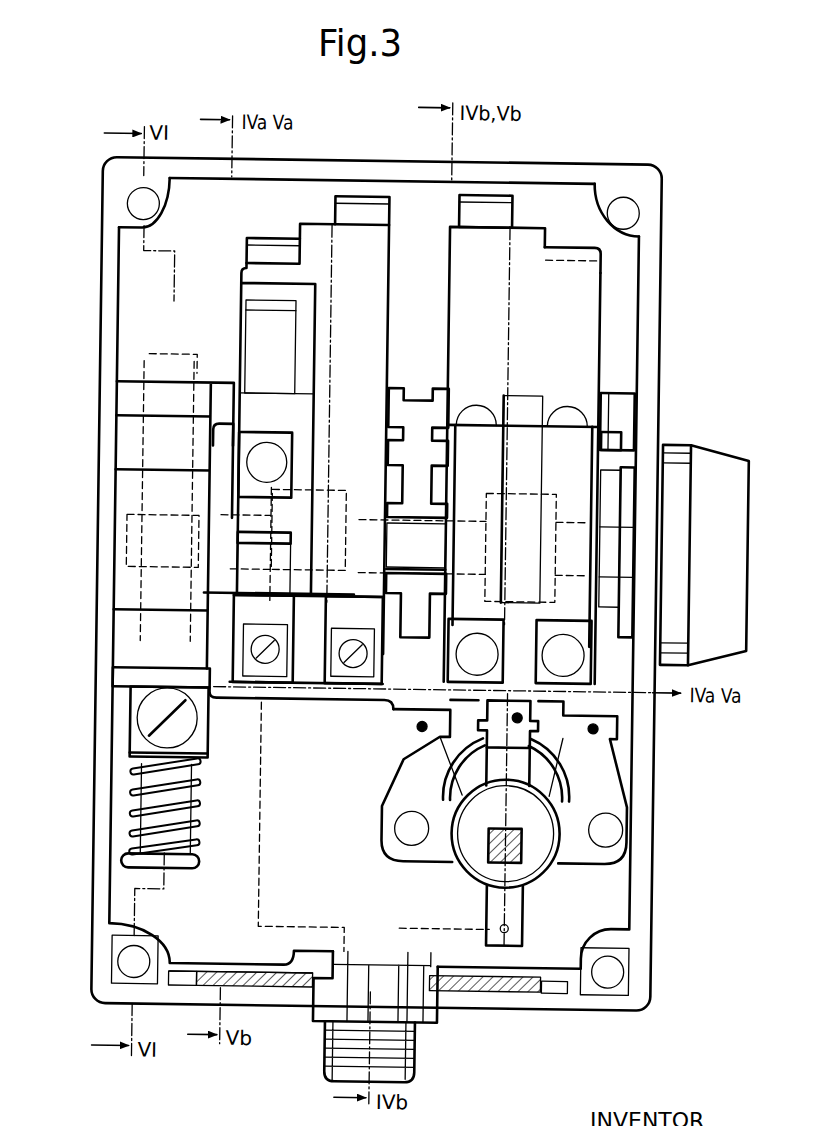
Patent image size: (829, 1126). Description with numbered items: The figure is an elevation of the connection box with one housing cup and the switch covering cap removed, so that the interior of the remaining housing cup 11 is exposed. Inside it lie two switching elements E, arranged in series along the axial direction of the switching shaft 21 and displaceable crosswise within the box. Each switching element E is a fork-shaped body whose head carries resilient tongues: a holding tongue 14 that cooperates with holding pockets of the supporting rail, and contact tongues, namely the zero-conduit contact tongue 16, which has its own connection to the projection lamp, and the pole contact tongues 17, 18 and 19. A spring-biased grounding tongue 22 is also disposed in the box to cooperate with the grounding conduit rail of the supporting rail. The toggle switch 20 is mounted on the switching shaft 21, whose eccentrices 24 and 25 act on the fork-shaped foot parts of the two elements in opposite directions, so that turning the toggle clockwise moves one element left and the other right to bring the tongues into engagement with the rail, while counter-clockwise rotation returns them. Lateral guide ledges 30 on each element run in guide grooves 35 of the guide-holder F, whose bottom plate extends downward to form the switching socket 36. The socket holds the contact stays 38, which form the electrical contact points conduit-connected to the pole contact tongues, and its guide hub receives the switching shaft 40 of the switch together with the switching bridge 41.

The housing cup 11 is at (104, 347).
The holding tongue 14 is at (251, 328).
The contact tongue 16 is at (247, 263).
The contact tongue 17 is at (568, 250).
The contact tongue 18 is at (336, 212).
The contact tongue 19 is at (484, 192).
The toggle switch 20 is at (688, 445).
The switching shaft 21 is at (426, 545).
The grounding tongue 22 is at (166, 353).
The eccentrix 24 is at (322, 593).
The eccentrix 25 is at (561, 500).
The guide ledges 30 is at (222, 433).
The guide grooves 35 is at (607, 410).
The switching socket 36 is at (634, 790).
The contact stays 38 is at (403, 760).
The switching shaft 40 is at (535, 860).
The switching bridge 41 is at (521, 756).
The switching element E is at (303, 229).
The guide-holder F is at (632, 395).